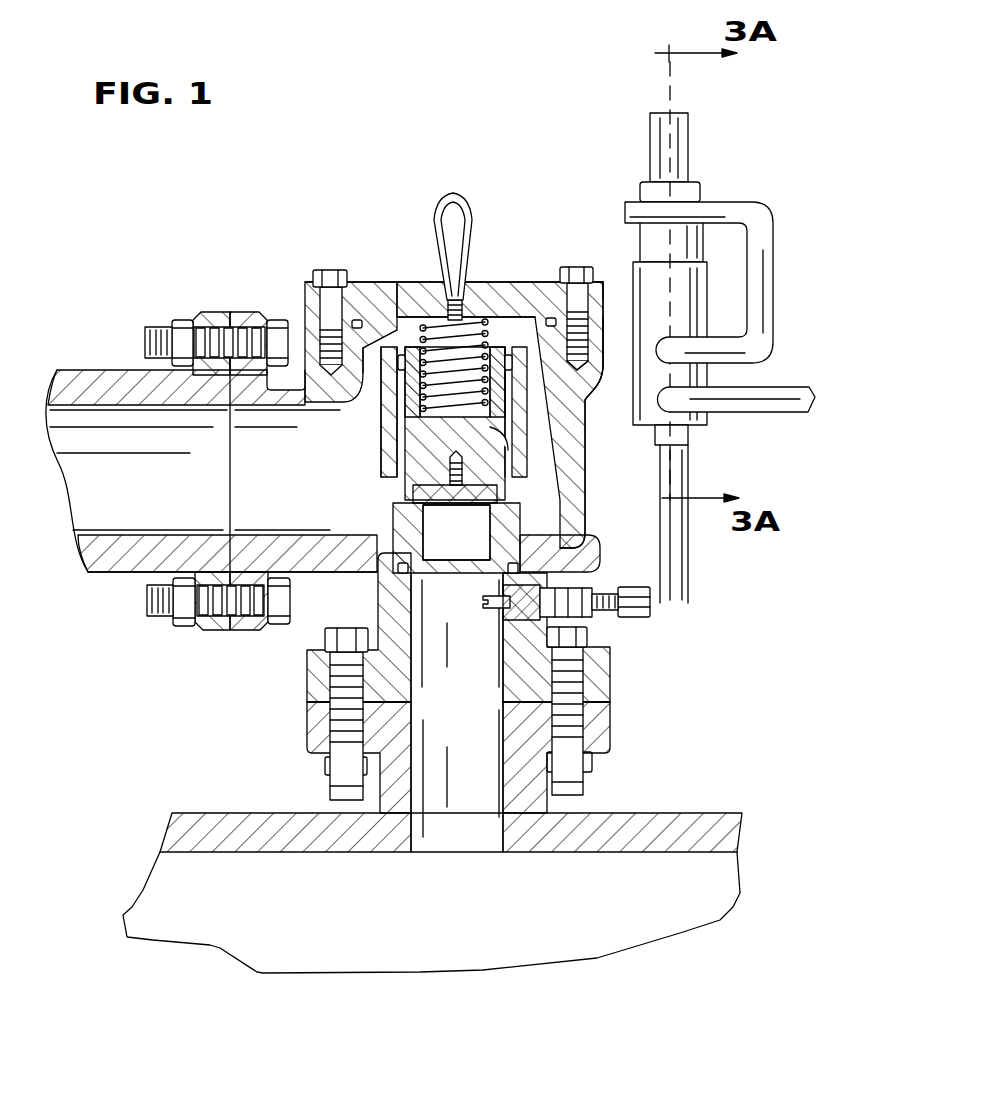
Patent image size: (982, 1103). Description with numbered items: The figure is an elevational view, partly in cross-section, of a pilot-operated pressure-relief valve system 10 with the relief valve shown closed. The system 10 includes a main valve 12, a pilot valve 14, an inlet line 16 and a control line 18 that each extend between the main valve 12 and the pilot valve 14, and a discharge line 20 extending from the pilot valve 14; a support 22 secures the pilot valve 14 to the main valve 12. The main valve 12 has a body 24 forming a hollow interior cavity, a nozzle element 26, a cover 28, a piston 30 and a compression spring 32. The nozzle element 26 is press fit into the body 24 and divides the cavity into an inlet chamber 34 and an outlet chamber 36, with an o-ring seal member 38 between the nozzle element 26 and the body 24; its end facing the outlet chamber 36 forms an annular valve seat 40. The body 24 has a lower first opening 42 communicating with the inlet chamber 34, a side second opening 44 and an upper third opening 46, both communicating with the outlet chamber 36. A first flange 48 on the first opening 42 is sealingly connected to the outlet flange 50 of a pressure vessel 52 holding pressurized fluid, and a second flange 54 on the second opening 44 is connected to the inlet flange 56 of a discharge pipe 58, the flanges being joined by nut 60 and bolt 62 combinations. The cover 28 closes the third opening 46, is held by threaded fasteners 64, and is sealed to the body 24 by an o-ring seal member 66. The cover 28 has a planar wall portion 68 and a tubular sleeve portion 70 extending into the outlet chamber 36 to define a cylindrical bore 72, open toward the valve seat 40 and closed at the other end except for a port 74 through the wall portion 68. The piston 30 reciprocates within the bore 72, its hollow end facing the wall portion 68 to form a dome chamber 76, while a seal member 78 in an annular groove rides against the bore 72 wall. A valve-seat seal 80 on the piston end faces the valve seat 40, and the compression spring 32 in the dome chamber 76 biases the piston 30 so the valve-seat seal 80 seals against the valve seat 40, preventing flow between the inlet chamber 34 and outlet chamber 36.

The pilot-operated pressure-relief valve system 10 is at (321, 145).
The main valve 12 is at (598, 427).
The pilot valve 14 is at (710, 173).
The inlet line 16 is at (690, 565).
The control line 18 is at (775, 286).
The discharge line 20 is at (748, 414).
The support 22 is at (612, 262).
The body 24 is at (588, 472).
The nozzle element 26 is at (576, 549).
The cover 28 is at (385, 268).
The piston 30 is at (400, 490).
The compression spring 32 is at (478, 330).
The inlet chamber 34 is at (485, 663).
The outlet chamber 36 is at (305, 480).
The seal member 38 is at (516, 568).
The valve seat 40 is at (393, 506).
The first opening 42 is at (462, 702).
The second opening 44 is at (232, 483).
The third opening 46 is at (408, 337).
The first flange 48 is at (607, 668).
The outlet flange 50 is at (608, 730).
The pressure vessel 52 is at (686, 813).
The second flange 54 is at (249, 632).
The inlet flange 56 is at (216, 632).
The discharge pipe 58 is at (132, 578).
The nut 60 is at (182, 322).
The bolt 62 is at (276, 320).
The threaded fasteners 64 is at (330, 270).
The seal member 66 is at (585, 398).
The wall portion 68 is at (370, 345).
The sleeve portion 70 is at (381, 418).
The bore 72 is at (492, 440).
The port 74 is at (461, 195).
The dome chamber 76 is at (430, 330).
The seal member 78 is at (508, 360).
The valve-seat seal 80 is at (487, 514).